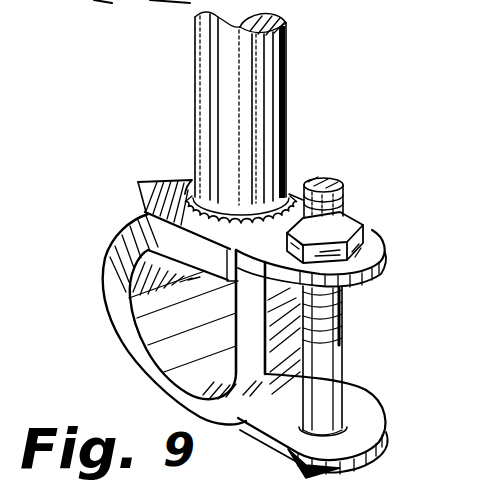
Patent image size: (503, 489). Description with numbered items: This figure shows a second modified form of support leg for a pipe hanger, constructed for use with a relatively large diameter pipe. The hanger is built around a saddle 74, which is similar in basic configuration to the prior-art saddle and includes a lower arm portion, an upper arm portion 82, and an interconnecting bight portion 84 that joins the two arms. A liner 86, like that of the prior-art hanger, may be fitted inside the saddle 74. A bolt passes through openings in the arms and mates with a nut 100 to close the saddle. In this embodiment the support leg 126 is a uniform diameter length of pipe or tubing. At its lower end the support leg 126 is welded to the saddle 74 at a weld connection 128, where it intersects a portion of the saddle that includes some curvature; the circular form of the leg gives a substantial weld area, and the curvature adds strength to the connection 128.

The saddle 74 is at (104, 257).
The upper arm portion 82 is at (382, 243).
The bight portion 84 is at (150, 188).
The liner 86 is at (120, 300).
The nut 100 is at (360, 216).
The support leg 126 is at (284, 106).
The weld connection 128 is at (292, 178).